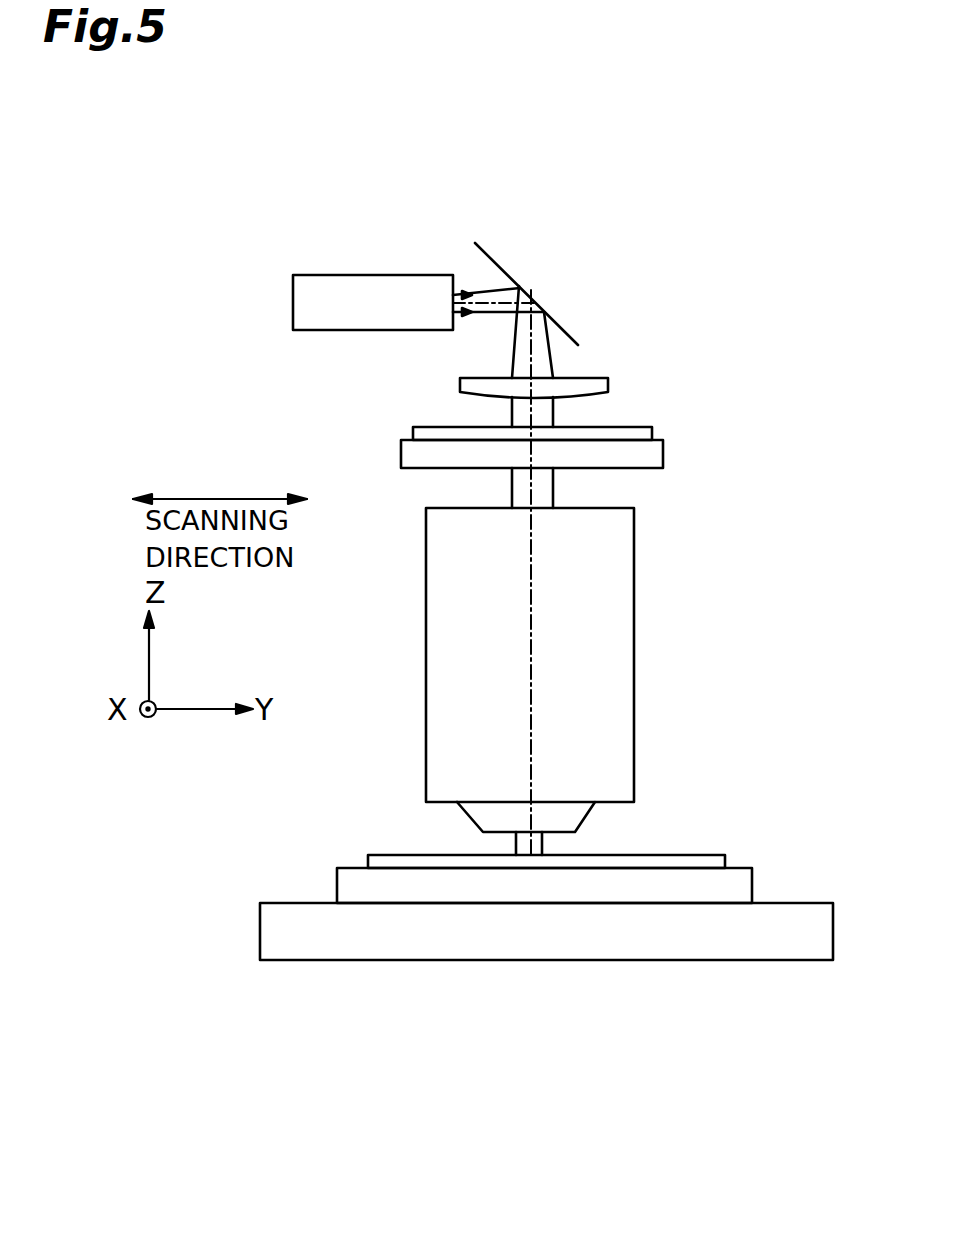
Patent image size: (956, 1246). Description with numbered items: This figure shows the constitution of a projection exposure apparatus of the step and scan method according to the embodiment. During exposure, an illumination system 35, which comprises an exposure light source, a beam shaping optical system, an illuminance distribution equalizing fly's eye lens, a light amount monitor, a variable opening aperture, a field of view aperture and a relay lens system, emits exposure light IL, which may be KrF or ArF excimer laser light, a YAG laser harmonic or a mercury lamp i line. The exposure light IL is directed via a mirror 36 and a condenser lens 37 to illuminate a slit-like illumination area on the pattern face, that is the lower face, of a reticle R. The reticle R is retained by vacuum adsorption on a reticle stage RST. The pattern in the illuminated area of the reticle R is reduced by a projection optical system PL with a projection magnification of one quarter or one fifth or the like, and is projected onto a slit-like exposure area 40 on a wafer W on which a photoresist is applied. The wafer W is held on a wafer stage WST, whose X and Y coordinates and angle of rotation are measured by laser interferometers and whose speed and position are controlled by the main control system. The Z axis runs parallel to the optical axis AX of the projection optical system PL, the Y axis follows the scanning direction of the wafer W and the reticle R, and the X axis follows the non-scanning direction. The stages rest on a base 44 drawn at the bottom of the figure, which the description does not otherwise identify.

The illumination system 35 is at (340, 275).
The exposure light IL is at (461, 292).
The mirror 36 is at (533, 292).
The condenser lens 37 is at (583, 377).
The reticle R is at (637, 425).
The reticle stage RST is at (662, 443).
The optical axis AX is at (532, 488).
The projection optical system PL is at (426, 593).
The exposure area 40 is at (517, 850).
The wafer W is at (678, 852).
The wafer stage WST is at (740, 867).
The base 44 is at (368, 943).